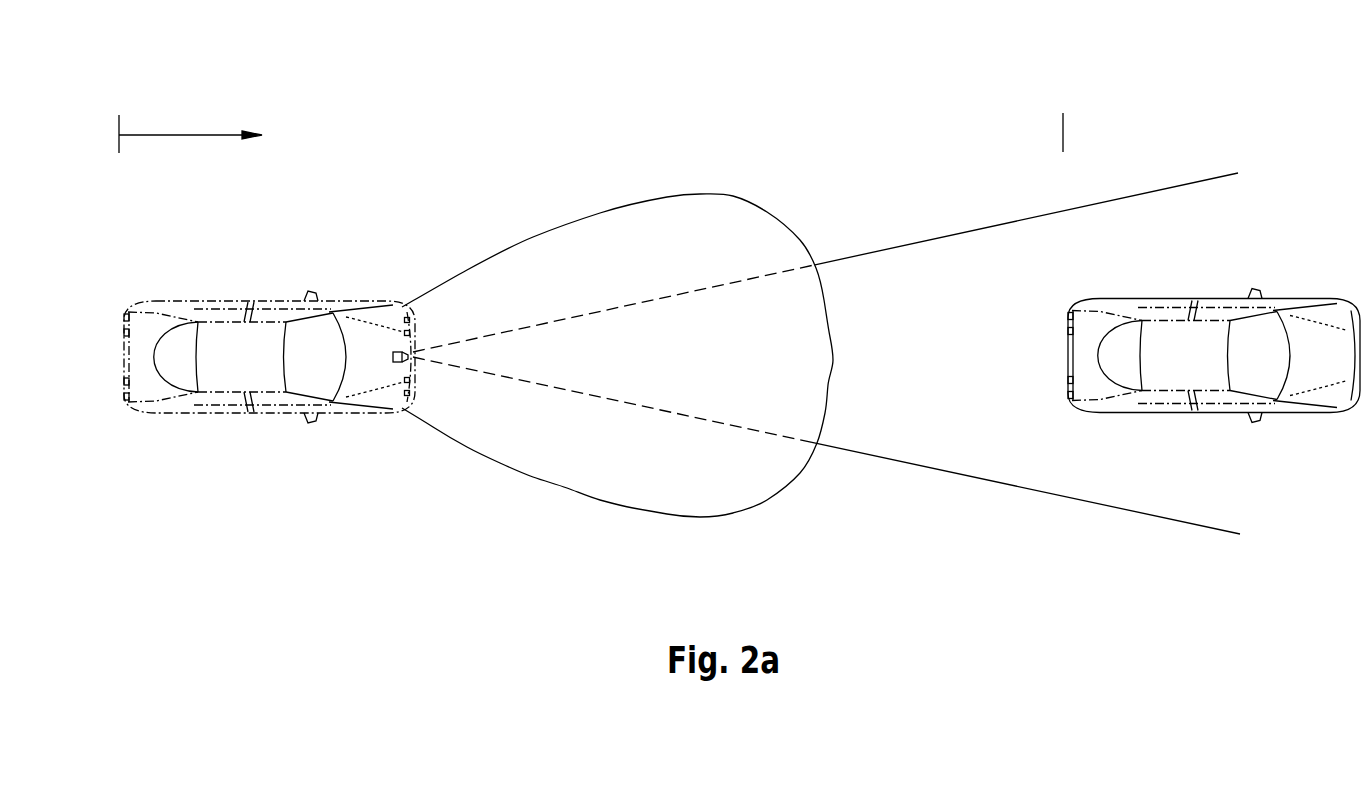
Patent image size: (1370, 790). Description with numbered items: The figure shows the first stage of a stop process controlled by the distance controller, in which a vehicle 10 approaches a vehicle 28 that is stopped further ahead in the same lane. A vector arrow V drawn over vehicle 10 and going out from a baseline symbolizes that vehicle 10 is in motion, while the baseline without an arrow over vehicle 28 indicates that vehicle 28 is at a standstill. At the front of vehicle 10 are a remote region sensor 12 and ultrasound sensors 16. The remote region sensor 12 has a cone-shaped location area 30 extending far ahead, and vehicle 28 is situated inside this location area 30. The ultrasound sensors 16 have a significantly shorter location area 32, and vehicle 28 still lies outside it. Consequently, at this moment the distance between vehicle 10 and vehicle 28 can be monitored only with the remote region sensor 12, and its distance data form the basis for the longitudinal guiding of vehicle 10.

The vehicle 10 is at (262, 355).
The remote region sensor 12 is at (417, 380).
The ultrasound sensors 16 is at (407, 316).
The vehicle 28 is at (1210, 353).
The location area 30 is at (970, 233).
The location area 32 is at (603, 238).
The vector arrow V is at (206, 135).